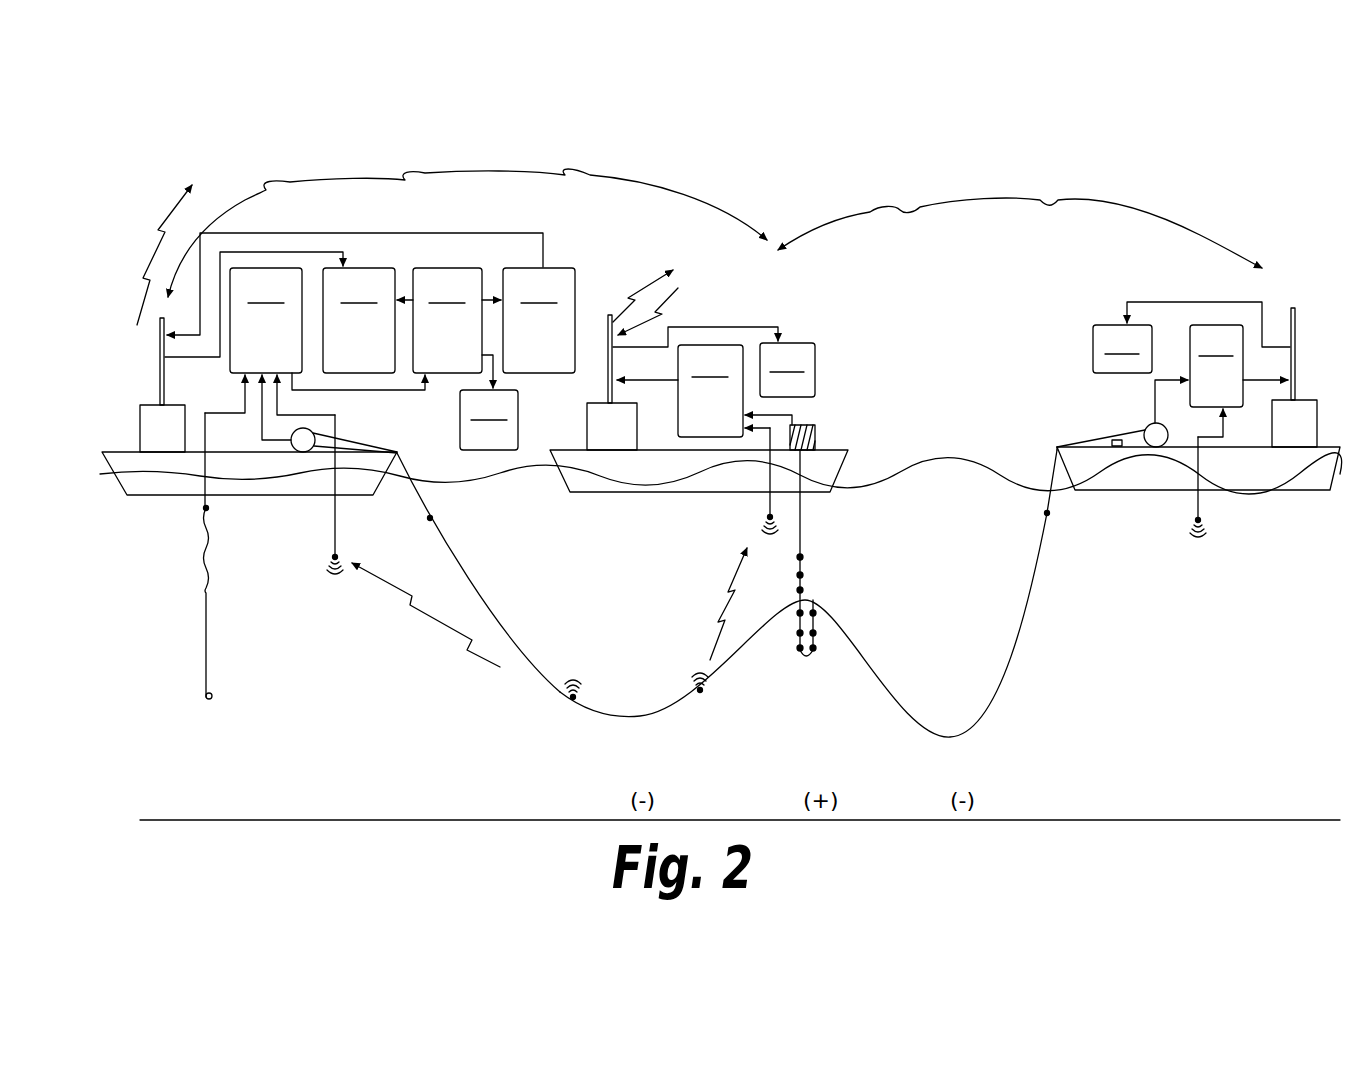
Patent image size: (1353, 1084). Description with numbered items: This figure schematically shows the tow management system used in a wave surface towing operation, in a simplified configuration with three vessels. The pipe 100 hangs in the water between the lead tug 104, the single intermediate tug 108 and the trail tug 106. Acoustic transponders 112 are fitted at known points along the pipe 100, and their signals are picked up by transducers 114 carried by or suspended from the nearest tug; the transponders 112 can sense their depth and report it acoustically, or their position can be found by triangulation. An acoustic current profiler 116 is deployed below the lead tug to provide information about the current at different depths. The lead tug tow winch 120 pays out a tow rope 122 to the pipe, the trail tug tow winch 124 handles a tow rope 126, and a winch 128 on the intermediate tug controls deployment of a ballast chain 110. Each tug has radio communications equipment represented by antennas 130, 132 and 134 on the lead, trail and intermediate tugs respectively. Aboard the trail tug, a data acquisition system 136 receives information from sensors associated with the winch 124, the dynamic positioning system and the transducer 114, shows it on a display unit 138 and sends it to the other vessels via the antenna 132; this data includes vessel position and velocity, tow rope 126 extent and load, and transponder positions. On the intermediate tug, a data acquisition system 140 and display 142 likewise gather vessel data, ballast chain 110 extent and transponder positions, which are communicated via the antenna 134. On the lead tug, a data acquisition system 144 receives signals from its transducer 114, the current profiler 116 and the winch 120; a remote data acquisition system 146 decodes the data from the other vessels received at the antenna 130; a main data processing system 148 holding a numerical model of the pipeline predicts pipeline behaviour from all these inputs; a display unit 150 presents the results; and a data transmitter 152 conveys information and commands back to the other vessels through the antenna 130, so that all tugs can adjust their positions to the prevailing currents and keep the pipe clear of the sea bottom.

The pipe 100 is at (652, 718).
The lead tug 104 is at (112, 450).
The trail tug 106 is at (1320, 440).
The intermediate tug 108 is at (575, 450).
The ballast chain 110 is at (820, 584).
The acoustic transponders 112 is at (718, 722).
The transducers 114 is at (340, 556).
The acoustic current profiler 116 is at (206, 648).
The lead tug tow winch 120 is at (318, 432).
The tow rope 122 is at (422, 507).
The trail tug tow winch 124 is at (1145, 428).
The tow rope 126 is at (1050, 480).
The winch 128 is at (815, 430).
The antenna 130 is at (160, 375).
The antenna 132 is at (1296, 345).
The antenna 134 is at (610, 345).
The data acquisition system 136 is at (1216, 366).
The display unit 138 is at (1122, 350).
The data acquisition system 140 is at (710, 391).
The display 142 is at (787, 370).
The data acquisition system 144 is at (266, 320).
The remote data acquisition system 146 is at (359, 320).
The main data processing system 148 is at (447, 320).
The display unit 150 is at (489, 420).
The data transmitter 152 is at (539, 320).